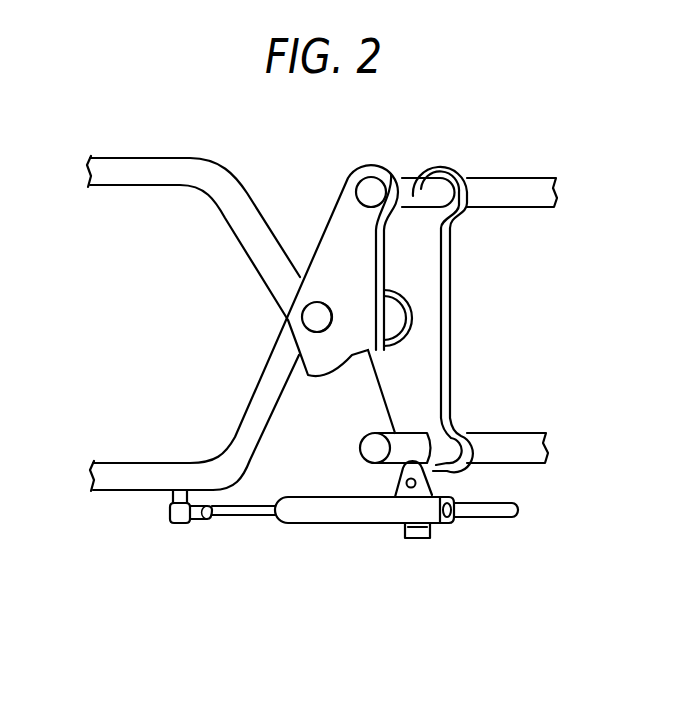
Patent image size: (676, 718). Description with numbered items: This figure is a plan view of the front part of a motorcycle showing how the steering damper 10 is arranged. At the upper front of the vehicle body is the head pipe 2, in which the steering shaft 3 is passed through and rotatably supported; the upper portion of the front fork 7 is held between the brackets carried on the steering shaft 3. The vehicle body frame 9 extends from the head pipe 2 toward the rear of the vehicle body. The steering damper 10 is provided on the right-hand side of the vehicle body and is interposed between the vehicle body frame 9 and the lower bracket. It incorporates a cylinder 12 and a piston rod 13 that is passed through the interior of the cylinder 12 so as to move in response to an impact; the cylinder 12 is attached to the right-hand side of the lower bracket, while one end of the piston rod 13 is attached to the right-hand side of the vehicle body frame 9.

The head pipe 2 is at (395, 321).
The steering shaft 3 is at (300, 320).
The front fork 7 is at (515, 177).
The vehicle body frame 9 is at (136, 462).
The steering damper 10 is at (336, 534).
The cylinder 12 is at (311, 497).
The piston rod 13 is at (247, 517).